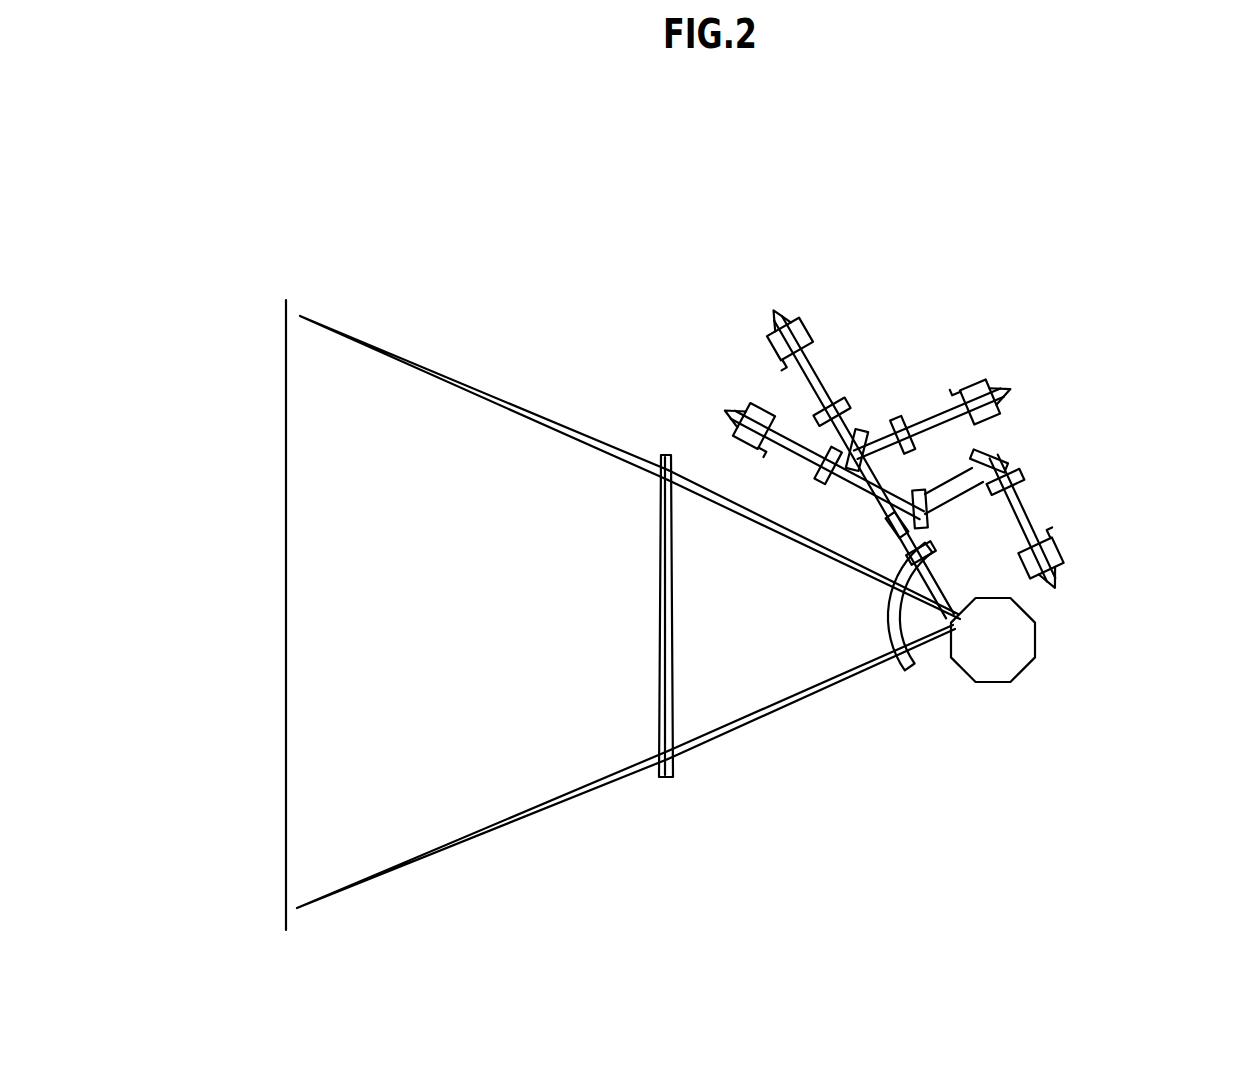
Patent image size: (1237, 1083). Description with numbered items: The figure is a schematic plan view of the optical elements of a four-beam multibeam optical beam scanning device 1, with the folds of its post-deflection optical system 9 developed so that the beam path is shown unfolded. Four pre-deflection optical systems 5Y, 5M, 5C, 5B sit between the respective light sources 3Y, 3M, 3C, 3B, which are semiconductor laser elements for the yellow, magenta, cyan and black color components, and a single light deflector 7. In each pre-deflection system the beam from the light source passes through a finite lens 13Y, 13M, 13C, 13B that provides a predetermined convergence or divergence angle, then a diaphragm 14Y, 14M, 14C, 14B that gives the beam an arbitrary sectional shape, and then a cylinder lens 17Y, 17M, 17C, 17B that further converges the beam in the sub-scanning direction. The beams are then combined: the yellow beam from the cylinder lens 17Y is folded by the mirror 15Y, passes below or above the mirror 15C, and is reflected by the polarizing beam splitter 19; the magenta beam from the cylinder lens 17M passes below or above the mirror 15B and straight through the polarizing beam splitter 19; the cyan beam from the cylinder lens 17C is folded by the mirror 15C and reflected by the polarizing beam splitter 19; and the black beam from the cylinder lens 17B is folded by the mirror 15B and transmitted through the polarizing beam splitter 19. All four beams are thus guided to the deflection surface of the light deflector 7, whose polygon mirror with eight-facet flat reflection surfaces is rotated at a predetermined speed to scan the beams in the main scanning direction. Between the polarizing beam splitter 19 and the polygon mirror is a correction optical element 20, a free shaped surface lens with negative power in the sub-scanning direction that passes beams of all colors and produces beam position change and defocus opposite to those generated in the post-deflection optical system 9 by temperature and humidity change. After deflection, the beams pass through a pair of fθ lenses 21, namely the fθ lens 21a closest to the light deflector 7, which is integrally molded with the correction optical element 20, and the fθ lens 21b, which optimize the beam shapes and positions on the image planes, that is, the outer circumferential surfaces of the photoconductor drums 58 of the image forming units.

The multibeam optical beam scanning device 1 is at (327, 190).
The photoconductor drum 58 is at (284, 431).
The post-deflection optical system 9 is at (462, 624).
The pair of fθ lenses 21 is at (795, 616).
The fθ lens 21a is at (865, 607).
The fθ lens 21b is at (676, 619).
The light deflector 7 is at (995, 683).
The correction optical element 20 is at (935, 546).
The polarizing beam splitter 19 is at (884, 525).
The mirror 15B is at (857, 430).
The mirror 15C is at (927, 500).
The mirror 15Y is at (1006, 458).
The pre-deflection optical system 5M is at (821, 389).
The light source 3M is at (775, 313).
The finite lens 13M is at (808, 330).
The diaphragm 14M is at (788, 368).
The cylinder lens 17M is at (846, 405).
The pre-deflection optical system 5C is at (722, 411).
The light source 3C is at (725, 413).
The finite lens 13C is at (745, 404).
The diaphragm 14C is at (763, 453).
The cylinder lens 17C is at (818, 452).
The pre-deflection optical system 5B is at (978, 341).
The light source 3B is at (1007, 392).
The finite lens 13B is at (977, 383).
The diaphragm 14B is at (957, 392).
The cylinder lens 17B is at (912, 418).
The pre-deflection optical system 5Y is at (1102, 534).
The light source 3Y is at (1060, 586).
The finite lens 13Y is at (1062, 551).
The diaphragm 14Y is at (1048, 537).
The cylinder lens 17Y is at (1016, 478).